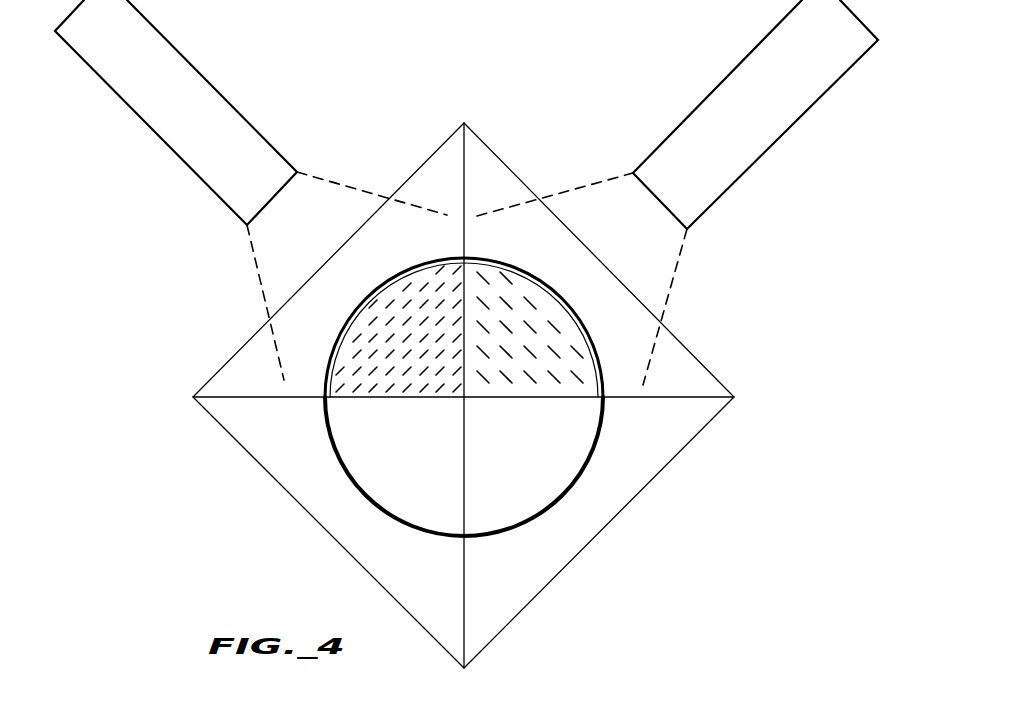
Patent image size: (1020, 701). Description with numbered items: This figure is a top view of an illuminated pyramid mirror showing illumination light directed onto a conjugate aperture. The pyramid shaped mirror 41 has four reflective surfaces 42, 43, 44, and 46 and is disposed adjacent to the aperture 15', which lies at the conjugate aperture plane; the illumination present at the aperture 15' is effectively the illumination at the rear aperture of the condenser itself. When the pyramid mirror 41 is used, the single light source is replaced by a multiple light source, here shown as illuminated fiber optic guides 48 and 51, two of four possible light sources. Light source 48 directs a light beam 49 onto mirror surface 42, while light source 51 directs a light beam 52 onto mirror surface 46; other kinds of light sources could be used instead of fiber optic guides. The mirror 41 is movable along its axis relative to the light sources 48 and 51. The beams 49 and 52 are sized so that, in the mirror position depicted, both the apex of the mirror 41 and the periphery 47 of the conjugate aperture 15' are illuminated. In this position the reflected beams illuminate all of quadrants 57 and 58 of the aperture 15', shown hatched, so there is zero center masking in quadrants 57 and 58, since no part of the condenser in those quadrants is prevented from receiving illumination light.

The aperture 15' is at (492, 409).
The pyramid shaped mirror 41 is at (480, 395).
The mirror surface 42 is at (683, 389).
The reflective surface 43 is at (510, 583).
The reflective surface 44 is at (439, 583).
The mirror surface 46 is at (258, 380).
The periphery of conjugate aperture 47 is at (581, 467).
The light source 48 is at (758, 133).
The light beam 49 is at (600, 202).
The light source 51 is at (172, 128).
The light beam 52 is at (331, 200).
The quadrant 57 is at (518, 310).
The quadrant 58 is at (415, 310).